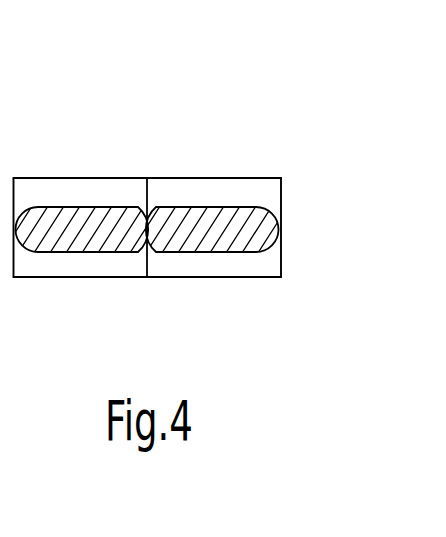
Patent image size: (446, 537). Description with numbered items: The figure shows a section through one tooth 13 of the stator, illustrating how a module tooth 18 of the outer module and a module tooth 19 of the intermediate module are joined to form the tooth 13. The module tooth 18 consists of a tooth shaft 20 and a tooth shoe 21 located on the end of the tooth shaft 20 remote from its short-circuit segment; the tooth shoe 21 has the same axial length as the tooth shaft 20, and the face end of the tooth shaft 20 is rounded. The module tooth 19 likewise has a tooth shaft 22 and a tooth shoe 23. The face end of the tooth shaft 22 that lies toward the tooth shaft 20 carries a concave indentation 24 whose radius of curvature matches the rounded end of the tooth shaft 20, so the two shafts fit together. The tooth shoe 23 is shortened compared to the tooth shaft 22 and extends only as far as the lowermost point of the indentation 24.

The teeth 13 is at (148, 146).
The module tooth 18 is at (117, 168).
The module tooth 19 is at (268, 169).
The tooth shaft 20 is at (70, 230).
The tooth shoe 21 is at (60, 260).
The tooth shaft 22 is at (227, 228).
The tooth shoe 23 is at (206, 262).
The concave indentation 24 is at (152, 238).